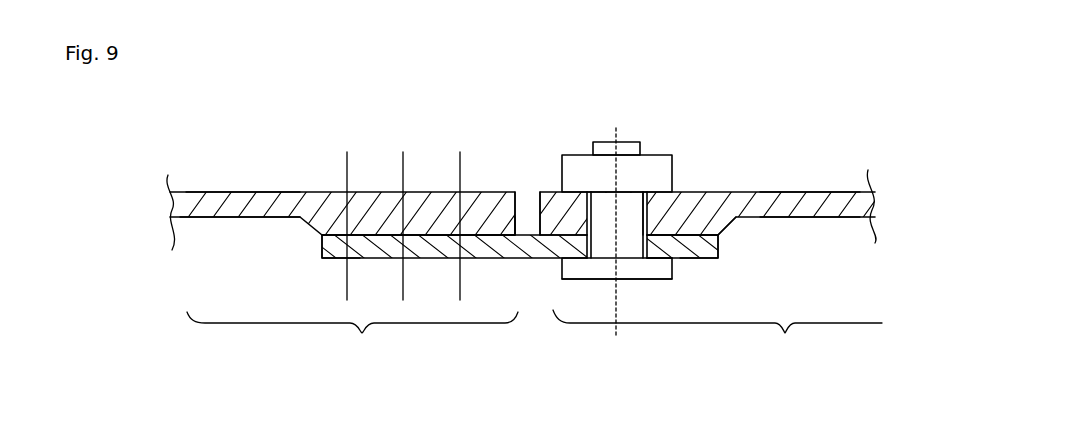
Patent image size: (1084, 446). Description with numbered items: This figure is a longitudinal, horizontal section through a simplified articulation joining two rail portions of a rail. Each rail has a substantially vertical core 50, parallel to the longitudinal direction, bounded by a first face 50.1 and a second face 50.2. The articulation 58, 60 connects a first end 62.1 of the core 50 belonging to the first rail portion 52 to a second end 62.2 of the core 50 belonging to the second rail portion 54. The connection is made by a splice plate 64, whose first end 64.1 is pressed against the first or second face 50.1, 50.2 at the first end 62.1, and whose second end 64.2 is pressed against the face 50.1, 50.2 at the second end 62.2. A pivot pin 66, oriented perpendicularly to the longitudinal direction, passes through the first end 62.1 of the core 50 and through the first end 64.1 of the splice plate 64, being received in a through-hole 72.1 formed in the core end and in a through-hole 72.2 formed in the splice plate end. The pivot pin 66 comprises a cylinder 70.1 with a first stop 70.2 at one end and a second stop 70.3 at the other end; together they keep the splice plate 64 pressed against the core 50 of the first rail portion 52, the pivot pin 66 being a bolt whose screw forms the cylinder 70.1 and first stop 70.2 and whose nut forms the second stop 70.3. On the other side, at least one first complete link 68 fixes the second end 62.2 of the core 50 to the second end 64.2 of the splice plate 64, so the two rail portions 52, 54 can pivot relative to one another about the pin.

The core 50 is at (220, 186).
The first face 50.1 is at (202, 220).
The second face 50.2 is at (186, 191).
The front rail portion 52 is at (717, 335).
The intermediate rail portion 54 is at (352, 338).
The front articulation 58 is at (511, 168).
The rear articulation 60 is at (522, 182).
The first end of the core 62.1 is at (733, 192).
The second end of the core 62.2 is at (433, 191).
The splice plate 64 is at (533, 268).
The first end of the splice plate 64.1 is at (698, 259).
The second end of the splice plate 64.2 is at (334, 259).
The pivot pin 66 is at (597, 295).
The first complete link 68 is at (466, 295).
The cylinder 70.1 is at (628, 262).
The first stop 70.2 is at (652, 273).
The second stop 70.3 is at (650, 170).
The through-hole 72.1 is at (648, 210).
The through-hole 72.2 is at (673, 262).